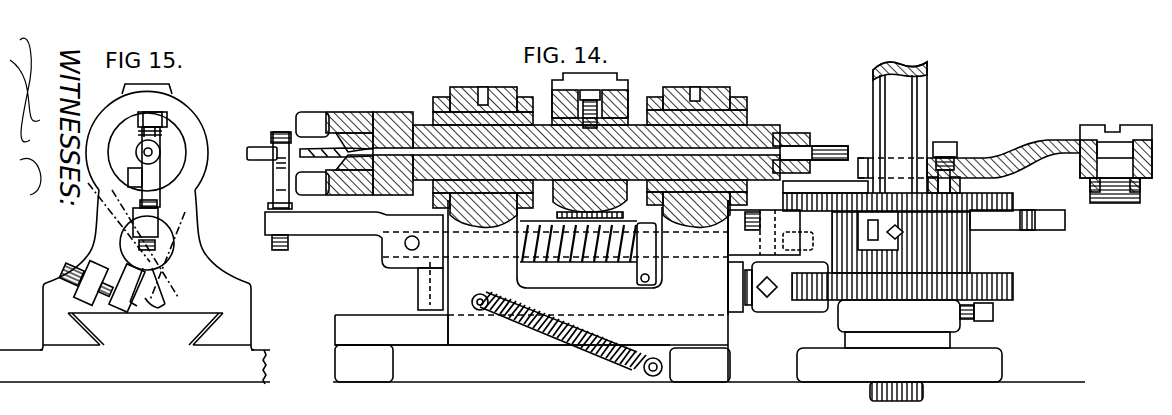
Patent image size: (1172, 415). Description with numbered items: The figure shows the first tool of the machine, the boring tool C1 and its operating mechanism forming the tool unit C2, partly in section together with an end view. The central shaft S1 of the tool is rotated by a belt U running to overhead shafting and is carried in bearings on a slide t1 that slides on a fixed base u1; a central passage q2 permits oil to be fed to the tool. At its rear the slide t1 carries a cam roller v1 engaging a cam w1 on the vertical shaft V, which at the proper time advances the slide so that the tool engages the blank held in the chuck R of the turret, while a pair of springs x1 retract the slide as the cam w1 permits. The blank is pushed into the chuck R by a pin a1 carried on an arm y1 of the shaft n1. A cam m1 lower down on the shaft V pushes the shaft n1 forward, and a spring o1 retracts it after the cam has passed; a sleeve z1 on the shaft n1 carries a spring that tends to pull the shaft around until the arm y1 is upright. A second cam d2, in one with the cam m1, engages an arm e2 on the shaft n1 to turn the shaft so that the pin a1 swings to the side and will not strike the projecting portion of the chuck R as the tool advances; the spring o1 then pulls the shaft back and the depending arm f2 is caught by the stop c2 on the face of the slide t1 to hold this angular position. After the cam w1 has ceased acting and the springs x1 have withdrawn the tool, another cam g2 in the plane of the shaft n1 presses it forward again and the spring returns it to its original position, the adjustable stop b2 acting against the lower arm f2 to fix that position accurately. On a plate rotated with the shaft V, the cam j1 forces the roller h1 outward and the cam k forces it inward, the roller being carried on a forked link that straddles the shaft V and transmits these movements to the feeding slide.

In FIG. 15, the chuck R is at (129, 135).
In FIG. 15, the pin a1 is at (164, 166).
In FIG. 14, the pin a1 is at (255, 146).
In FIG. 15, the arm y1 is at (151, 175).
In FIG. 14, the arm y1 is at (281, 186).
In FIG. 15, the shaft n1 is at (160, 248).
In FIG. 14, the shaft n1 is at (764, 233).
In FIG. 15, the adjustable stop b2 is at (75, 298).
In FIG. 14, the adjustable stop b2 is at (420, 290).
In FIG. 15, the depending arm f2 is at (127, 288).
In FIG. 15, the stop c2 is at (148, 303).
In FIG. 14, the stop c2 is at (443, 320).
In FIG. 14, the boring tool C1 is at (307, 143).
In FIG. 14, the tool C2 is at (590, 138).
In FIG. 14, the belt U is at (608, 82).
In FIG. 14, the central shaft S1 is at (634, 135).
In FIG. 14, the central passage q2 is at (770, 130).
In FIG. 14, the cam j1 is at (864, 180).
In FIG. 14, the cam k is at (797, 193).
In FIG. 14, the vertical shaft V is at (916, 127).
In FIG. 14, the roller h1 is at (980, 182).
In FIG. 14, the second cam d2 is at (1060, 224).
In FIG. 14, the cam m1 is at (930, 245).
In FIG. 14, the cam w1 is at (1010, 283).
In FIG. 14, the cam roller v1 is at (808, 293).
In FIG. 14, the slide t1 is at (710, 257).
In FIG. 14, the springs x1 is at (596, 332).
In FIG. 14, the fixed base u1 is at (502, 360).
In FIG. 14, the spring o1 is at (589, 247).
In FIG. 14, the sleeve z1 is at (647, 253).
In FIG. 14, the arm e2 is at (745, 216).
In FIG. 14, the cam g2 is at (798, 226).